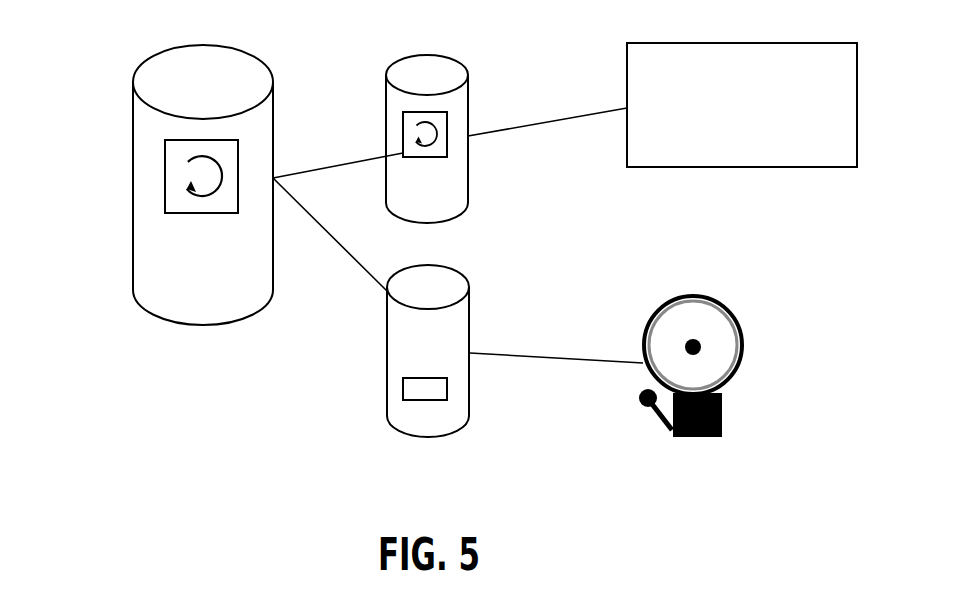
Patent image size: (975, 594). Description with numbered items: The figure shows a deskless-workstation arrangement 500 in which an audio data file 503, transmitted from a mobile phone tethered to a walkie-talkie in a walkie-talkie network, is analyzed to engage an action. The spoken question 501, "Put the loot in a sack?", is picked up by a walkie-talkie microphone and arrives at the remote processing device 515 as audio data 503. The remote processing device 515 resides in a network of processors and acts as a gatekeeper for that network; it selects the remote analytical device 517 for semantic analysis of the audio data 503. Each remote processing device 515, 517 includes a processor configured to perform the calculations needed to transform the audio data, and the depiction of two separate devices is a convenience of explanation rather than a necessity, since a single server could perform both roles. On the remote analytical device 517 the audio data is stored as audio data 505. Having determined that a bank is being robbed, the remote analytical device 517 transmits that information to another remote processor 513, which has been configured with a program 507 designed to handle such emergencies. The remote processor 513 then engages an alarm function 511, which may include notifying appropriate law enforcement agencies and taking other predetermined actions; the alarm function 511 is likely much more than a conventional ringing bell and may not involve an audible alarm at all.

The system / environment 500 is at (590, 262).
The text message box 501 is at (857, 55).
The audio data file 503 is at (403, 130).
The audio data 505 is at (165, 175).
The program 507 is at (403, 387).
The alarm function 511 is at (743, 332).
The remote processor 513 is at (470, 415).
The remote processing device 515 is at (462, 63).
The remote analytical device 517 is at (228, 290).